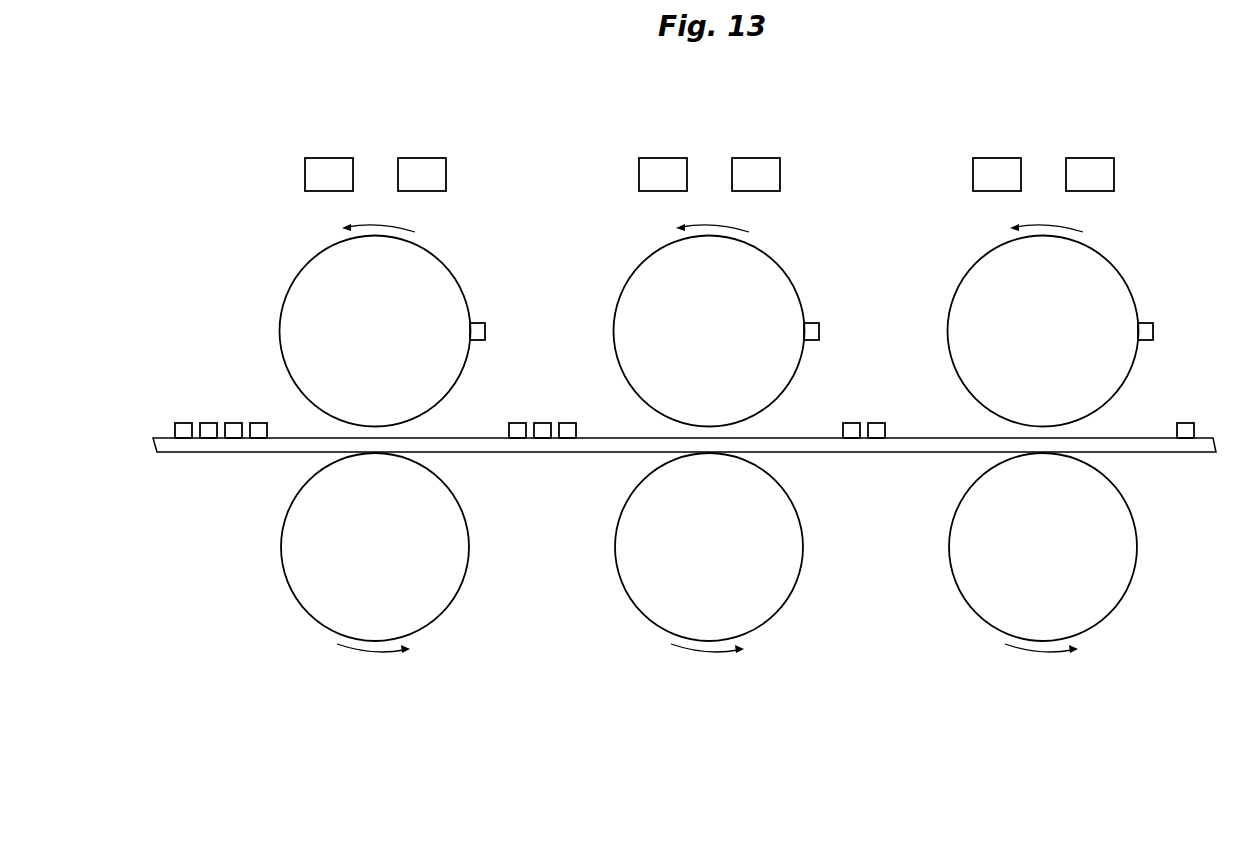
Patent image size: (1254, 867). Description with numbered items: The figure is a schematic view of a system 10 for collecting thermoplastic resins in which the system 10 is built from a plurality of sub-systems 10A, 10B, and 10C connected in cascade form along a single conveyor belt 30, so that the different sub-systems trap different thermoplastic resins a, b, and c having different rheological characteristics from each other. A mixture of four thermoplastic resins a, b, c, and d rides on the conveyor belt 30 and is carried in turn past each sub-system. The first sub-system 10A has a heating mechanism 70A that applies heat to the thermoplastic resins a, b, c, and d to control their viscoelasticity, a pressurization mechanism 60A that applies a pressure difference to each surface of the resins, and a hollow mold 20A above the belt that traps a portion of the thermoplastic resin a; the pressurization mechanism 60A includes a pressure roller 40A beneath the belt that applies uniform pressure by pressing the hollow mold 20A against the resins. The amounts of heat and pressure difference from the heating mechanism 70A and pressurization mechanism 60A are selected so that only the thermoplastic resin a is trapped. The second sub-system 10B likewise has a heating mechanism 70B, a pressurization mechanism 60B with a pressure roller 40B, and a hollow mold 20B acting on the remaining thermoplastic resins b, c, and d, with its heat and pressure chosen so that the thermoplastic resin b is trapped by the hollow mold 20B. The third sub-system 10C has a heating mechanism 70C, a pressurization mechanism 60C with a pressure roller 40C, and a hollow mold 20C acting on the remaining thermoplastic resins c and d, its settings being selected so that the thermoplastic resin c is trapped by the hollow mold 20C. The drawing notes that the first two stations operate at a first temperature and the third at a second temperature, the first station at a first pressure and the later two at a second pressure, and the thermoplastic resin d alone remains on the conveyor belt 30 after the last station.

The system 10 is at (213, 100).
The sub-system 10A is at (442, 107).
The sub-system 10B is at (776, 107).
The sub-system 10C is at (1110, 107).
The hollow mold 20A is at (432, 273).
The hollow mold 20B is at (766, 273).
The hollow mold 20C is at (1100, 273).
The pressure roller 40A is at (452, 558).
The pressure roller 40B is at (786, 558).
The pressure roller 40C is at (1120, 558).
The pressurization mechanism 60A is at (419, 157).
The pressurization mechanism 60B is at (753, 157).
The pressurization mechanism 60C is at (1087, 157).
The heating mechanism 70A is at (332, 157).
The heating mechanism 70B is at (666, 157).
The heating mechanism 70C is at (1000, 157).
The conveyor belt 30 is at (153, 441).
The thermoplastic resin a is at (487, 330).
The thermoplastic resin b is at (821, 330).
The thermoplastic resin c is at (1155, 330).
The thermoplastic resin d is at (183, 422).